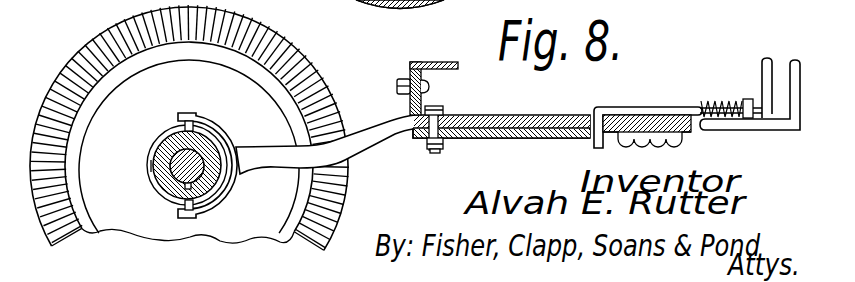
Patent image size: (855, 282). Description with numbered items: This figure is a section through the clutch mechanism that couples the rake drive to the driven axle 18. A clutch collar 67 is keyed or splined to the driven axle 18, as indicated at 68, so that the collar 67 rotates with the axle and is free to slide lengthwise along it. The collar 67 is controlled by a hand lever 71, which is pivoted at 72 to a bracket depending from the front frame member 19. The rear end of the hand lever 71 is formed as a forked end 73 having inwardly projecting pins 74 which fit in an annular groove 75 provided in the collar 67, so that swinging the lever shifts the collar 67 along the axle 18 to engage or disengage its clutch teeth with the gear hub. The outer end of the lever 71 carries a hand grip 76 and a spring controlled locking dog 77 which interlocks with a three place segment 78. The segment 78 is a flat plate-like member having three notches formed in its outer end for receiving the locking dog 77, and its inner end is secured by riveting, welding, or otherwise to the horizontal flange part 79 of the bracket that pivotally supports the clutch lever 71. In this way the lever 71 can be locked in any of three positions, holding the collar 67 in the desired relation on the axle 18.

The driven axle 18 is at (190, 178).
The front frame member 19 is at (420, 62).
The clutch collar 67 is at (168, 148).
The key or spline 68 is at (196, 150).
The hand lever 71 is at (524, 115).
The pivot 72 is at (421, 139).
The forked end 73 is at (238, 187).
The inwardly projecting pins 74 is at (178, 118).
The annular groove 75 is at (152, 167).
The hand grip 76 is at (792, 70).
The spring controlled locking dog 77 is at (665, 97).
The three place segment 78 is at (584, 137).
The horizontal flange part 79 is at (448, 140).